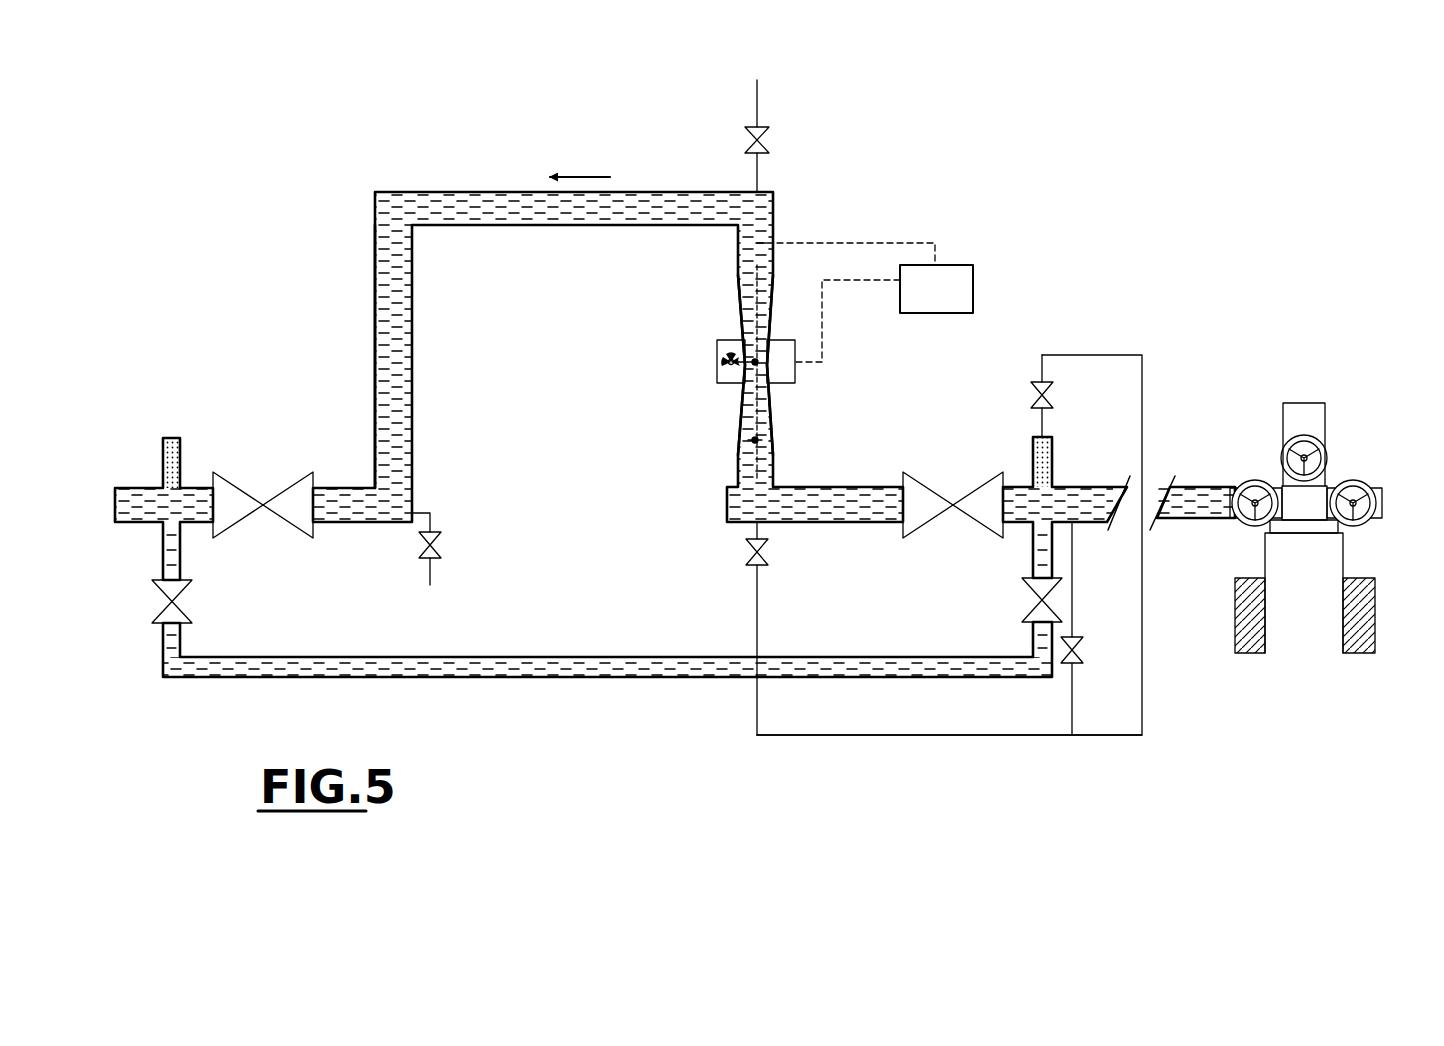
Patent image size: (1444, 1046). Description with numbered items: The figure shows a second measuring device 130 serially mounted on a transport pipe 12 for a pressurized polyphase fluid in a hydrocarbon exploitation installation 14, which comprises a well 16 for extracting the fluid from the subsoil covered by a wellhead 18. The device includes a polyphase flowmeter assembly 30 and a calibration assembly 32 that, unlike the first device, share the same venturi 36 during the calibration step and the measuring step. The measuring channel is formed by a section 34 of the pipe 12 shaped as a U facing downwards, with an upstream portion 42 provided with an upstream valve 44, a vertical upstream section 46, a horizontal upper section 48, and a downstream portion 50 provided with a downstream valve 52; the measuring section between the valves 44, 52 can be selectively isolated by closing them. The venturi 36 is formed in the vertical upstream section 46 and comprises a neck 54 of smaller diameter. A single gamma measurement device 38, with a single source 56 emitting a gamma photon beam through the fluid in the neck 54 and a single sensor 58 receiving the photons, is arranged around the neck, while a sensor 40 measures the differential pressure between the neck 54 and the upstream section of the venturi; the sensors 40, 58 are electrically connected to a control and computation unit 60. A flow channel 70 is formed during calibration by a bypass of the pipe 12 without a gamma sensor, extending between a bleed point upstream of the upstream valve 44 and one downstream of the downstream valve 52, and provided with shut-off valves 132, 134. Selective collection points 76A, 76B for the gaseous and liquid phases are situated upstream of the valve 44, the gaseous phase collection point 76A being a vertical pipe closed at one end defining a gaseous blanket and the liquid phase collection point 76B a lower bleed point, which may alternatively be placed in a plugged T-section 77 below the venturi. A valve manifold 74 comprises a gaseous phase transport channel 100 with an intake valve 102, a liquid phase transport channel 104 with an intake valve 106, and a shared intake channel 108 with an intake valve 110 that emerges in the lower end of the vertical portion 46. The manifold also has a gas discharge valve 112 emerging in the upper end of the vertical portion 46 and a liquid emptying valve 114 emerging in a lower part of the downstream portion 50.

The second measuring device 130 is at (288, 185).
The polyphase flowmeter assembly 30 is at (250, 320).
The calibration assembly 32 is at (608, 349).
The section of the pipe 34 is at (375, 262).
The horizontal upper section 48 is at (437, 192).
The downstream portion 50 is at (375, 325).
The vertical upstream section 46 is at (740, 243).
The venturi 36 is at (738, 313).
The gamma measurement device 38 is at (715, 375).
The source 56 is at (724, 383).
The sensor 58 is at (795, 378).
The neck 54 is at (768, 380).
The sensor for measuring differential pressure 40 is at (873, 230).
The control and computation unit 60 is at (936, 289).
The valve for discharging gas 112 is at (757, 102).
The downstream valve 52 is at (263, 480).
The shut-off valve 134 is at (175, 610).
The valve for emptying liquid 114 is at (420, 545).
The flow channel 70 is at (393, 675).
The plugged T-section 77 is at (727, 500).
The upstream valve 44 is at (980, 480).
The upstream portion 42 is at (1012, 540).
The gaseous phase collection point 76A is at (1052, 455).
The liquid phase collection point 76B is at (1072, 525).
The shut-off valve 132 is at (1022, 605).
The gaseous phase transport channel 100 is at (1100, 355).
The gaseous phase intake valve 102 is at (1032, 392).
The intake valve 110 is at (745, 553).
The shared intake channel 108 is at (878, 735).
The liquid phase transport channel 104 is at (1072, 683).
The liquid phase intake valve 106 is at (1082, 650).
The valve manifold 74 is at (1118, 745).
The transport pipe 12 is at (1202, 473).
The hydrocarbon exploitation installation 14 is at (1322, 385).
The wellhead 18 is at (1382, 490).
The well 16 is at (1333, 612).